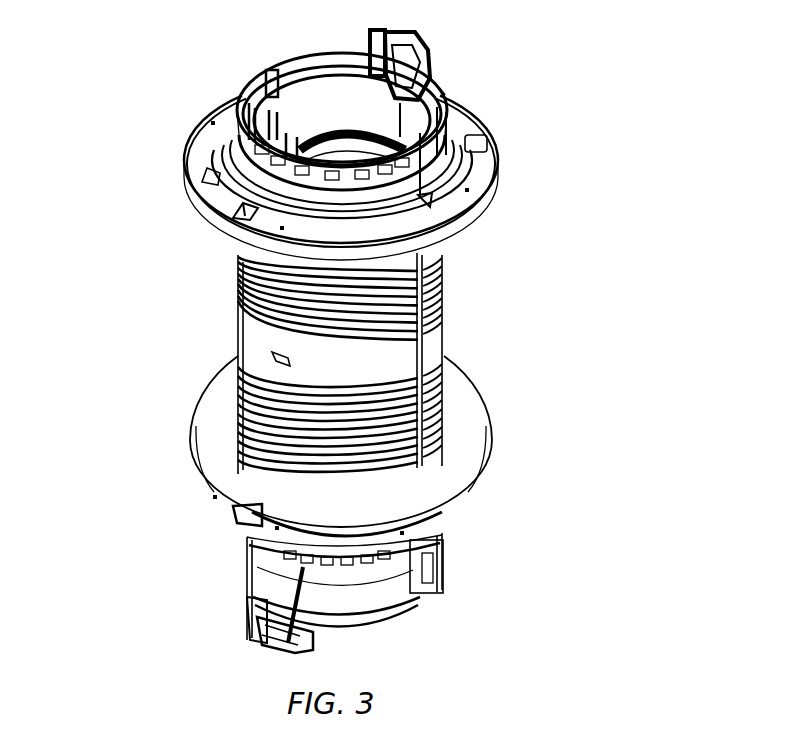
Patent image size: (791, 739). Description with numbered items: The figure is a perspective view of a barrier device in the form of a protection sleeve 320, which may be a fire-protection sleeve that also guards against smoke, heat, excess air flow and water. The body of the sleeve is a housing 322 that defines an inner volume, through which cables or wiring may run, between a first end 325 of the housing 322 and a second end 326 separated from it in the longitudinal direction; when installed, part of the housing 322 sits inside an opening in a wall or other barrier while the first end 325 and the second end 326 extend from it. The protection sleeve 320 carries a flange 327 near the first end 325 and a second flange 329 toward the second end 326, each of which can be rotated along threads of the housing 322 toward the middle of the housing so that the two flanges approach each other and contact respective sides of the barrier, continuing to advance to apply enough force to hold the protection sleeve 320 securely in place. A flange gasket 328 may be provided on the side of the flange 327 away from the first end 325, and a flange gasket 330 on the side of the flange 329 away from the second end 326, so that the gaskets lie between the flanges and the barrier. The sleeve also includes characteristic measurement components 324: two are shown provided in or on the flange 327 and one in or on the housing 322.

The protection sleeve 320 is at (613, 88).
The housing 322 is at (238, 327).
The characteristic measurement components 324 is at (187, 167).
The first end 325 is at (277, 72).
The second end 326 is at (432, 592).
The flange 327 is at (495, 167).
The flange gasket 328 is at (497, 195).
The flange 329 is at (495, 482).
The flange gasket 330 is at (497, 432).